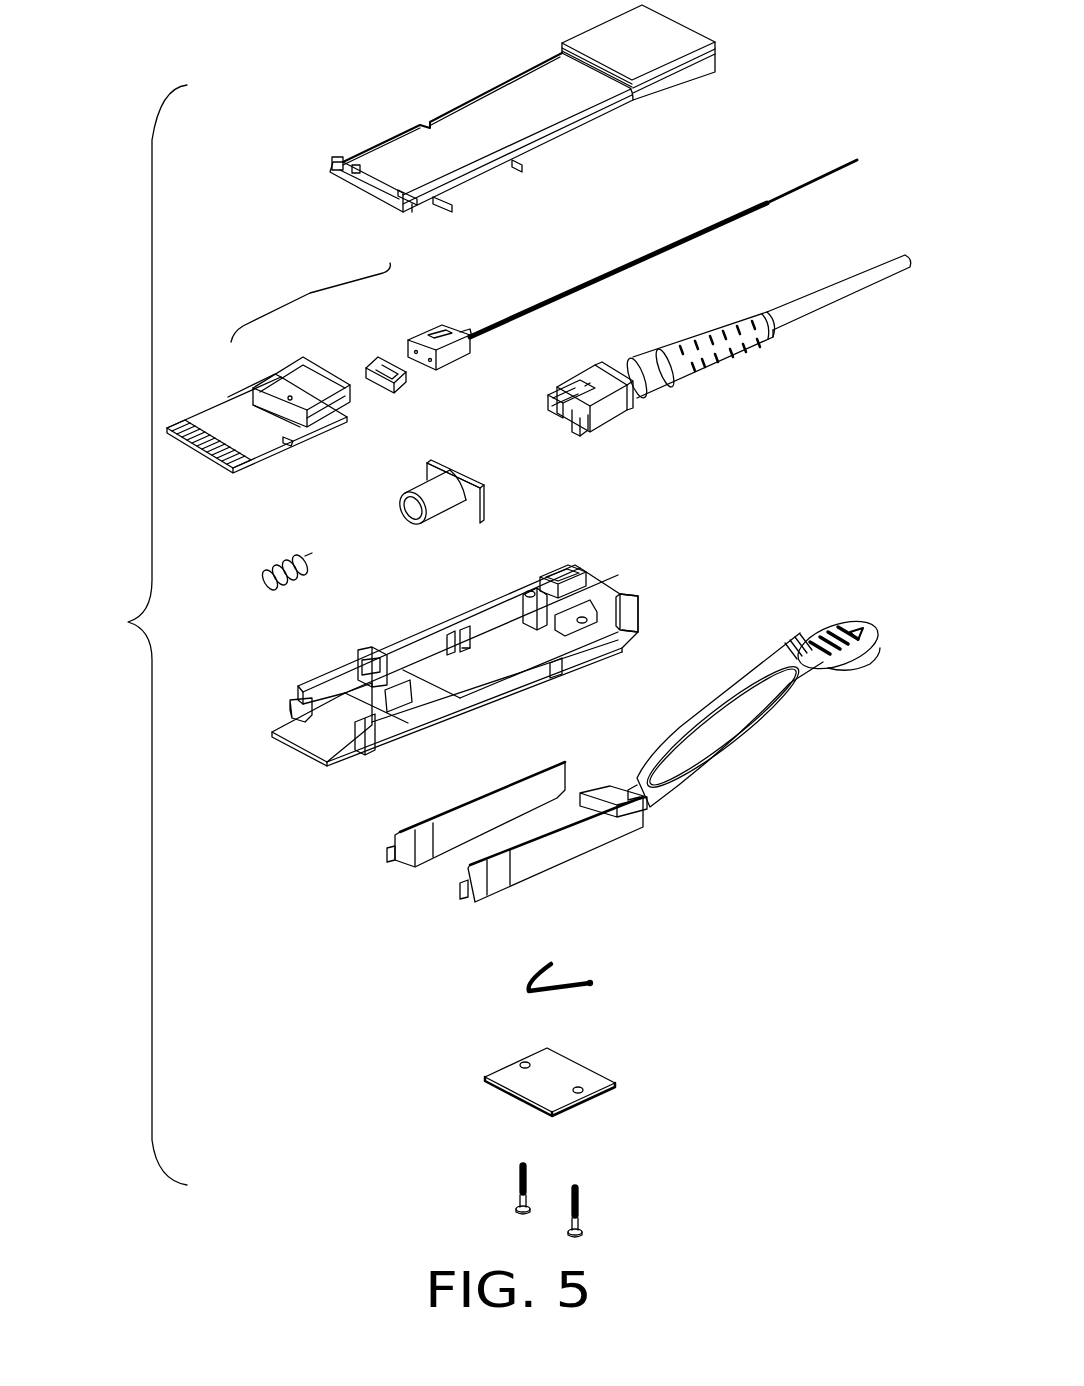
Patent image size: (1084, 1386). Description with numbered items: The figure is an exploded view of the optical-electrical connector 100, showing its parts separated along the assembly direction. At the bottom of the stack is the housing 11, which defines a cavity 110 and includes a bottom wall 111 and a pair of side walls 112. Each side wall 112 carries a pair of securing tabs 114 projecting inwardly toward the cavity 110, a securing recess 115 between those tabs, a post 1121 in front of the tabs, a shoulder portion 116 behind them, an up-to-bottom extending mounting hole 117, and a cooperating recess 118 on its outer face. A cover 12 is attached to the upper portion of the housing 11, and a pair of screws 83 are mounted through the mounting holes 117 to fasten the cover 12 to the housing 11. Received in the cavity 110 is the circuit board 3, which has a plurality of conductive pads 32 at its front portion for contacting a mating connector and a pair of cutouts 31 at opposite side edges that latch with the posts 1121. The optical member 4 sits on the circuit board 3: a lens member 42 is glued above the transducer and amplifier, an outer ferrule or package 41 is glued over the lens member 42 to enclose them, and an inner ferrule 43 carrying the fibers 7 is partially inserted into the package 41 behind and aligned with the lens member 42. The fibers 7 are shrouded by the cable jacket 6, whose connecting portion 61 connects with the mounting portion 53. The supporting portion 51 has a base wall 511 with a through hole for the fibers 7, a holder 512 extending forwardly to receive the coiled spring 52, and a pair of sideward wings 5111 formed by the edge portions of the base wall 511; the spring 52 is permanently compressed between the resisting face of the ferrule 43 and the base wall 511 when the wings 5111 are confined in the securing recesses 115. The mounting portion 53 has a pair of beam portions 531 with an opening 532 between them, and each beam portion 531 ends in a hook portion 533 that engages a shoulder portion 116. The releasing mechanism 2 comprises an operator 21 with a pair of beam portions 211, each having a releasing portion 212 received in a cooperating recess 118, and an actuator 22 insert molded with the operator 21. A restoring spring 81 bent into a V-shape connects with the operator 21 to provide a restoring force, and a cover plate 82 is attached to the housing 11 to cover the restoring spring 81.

The optical-electrical connector 100 is at (128, 622).
The cover 12 is at (508, 110).
The fibers 7 is at (570, 283).
The optical member 4 is at (310, 293).
The outer ferrule or package 41 is at (305, 370).
The lens member 42 is at (375, 358).
The inner ferrule 43 is at (428, 330).
The circuit board 3 is at (262, 443).
The cutouts 31 is at (288, 440).
The conductive pads 32 is at (183, 425).
The coiled spring 52 is at (278, 557).
The supporting portion 51 is at (475, 508).
The base wall 511 is at (433, 463).
The wings 5111 is at (433, 478).
The holder 512 is at (437, 507).
The cable jacket 6 is at (690, 357).
The connecting portion 61 is at (648, 370).
The mounting portion 53 is at (607, 407).
The beam portions 531 is at (550, 383).
The opening 532 is at (555, 413).
The hook portion 533 is at (587, 427).
The housing 11 is at (640, 617).
The cavity 110 is at (507, 637).
The bottom wall 111 is at (330, 730).
The side walls 112 is at (333, 667).
The post 1121 is at (370, 667).
The securing tabs 114 is at (448, 643).
The securing recess 115 is at (463, 633).
The shoulder portion 116 is at (532, 602).
The mounting hole 117 is at (583, 618).
The cooperating recess 118 is at (487, 683).
The releasing mechanism 2 is at (655, 905).
The operator 21 is at (598, 825).
The beam portions 211 is at (545, 857).
The releasing portion 212 is at (458, 898).
The actuator 22 is at (713, 770).
The restoring spring 81 is at (557, 1000).
The cover plate 82 is at (593, 1083).
The screws 83 is at (582, 1200).